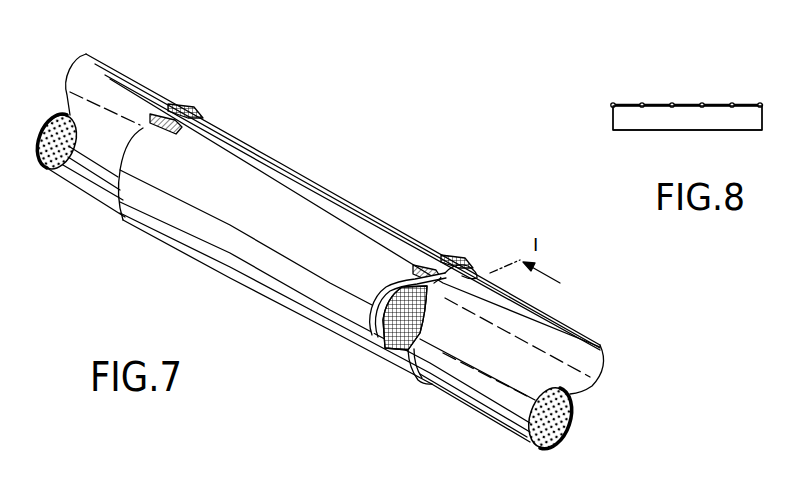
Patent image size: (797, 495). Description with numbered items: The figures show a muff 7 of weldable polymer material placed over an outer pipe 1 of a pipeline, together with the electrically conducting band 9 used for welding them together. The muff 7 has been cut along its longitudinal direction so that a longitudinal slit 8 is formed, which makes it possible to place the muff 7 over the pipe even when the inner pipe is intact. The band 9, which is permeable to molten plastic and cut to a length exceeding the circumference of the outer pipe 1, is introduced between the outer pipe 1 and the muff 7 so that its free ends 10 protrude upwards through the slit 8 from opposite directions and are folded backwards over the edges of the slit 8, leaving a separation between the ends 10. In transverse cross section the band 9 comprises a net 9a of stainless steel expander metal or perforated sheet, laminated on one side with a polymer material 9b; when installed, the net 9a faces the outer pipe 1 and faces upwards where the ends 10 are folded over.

In FIG. 7, the outer pipe 1 is at (90, 140).
In FIG. 7, the muff 7 is at (305, 243).
In FIG. 7, the longitudinal slit 8 is at (290, 182).
In FIG. 7, the band 9 is at (387, 328).
In FIG. 8, the band 9 is at (678, 101).
In FIG. 8, the net 9a is at (732, 105).
In FIG. 8, the polymer material 9b is at (647, 122).
In FIG. 7, the free ends of the band 10 is at (187, 103).